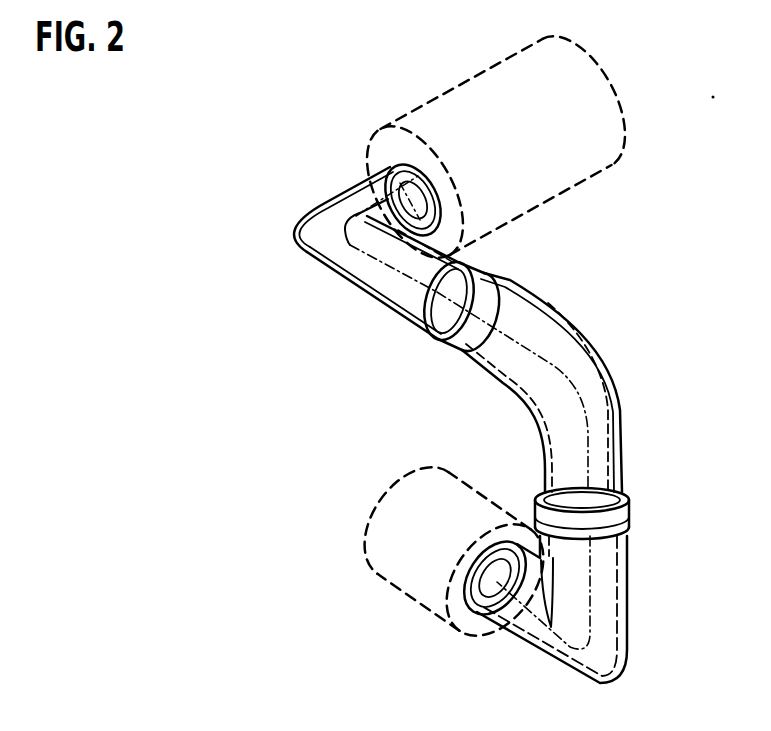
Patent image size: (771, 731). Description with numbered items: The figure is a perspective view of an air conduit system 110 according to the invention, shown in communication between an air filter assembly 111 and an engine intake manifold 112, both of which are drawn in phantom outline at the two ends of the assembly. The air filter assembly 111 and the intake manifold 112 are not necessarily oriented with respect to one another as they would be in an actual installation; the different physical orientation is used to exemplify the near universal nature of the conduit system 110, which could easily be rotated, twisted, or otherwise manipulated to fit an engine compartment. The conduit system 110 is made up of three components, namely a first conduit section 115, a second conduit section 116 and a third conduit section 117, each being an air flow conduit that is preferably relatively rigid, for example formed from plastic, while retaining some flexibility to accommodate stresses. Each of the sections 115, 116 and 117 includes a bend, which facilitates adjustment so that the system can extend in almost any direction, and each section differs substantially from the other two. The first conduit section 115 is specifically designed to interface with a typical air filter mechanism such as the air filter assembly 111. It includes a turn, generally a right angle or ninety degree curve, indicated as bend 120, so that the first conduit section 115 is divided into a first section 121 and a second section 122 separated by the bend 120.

The conduit system 110 is at (545, 284).
The air filter assembly 111 is at (613, 98).
The engine intake manifold 112 is at (433, 623).
The first conduit section 115 is at (343, 280).
The second conduit section 116 is at (607, 358).
The third conduit section 117 is at (630, 593).
The bend 120 is at (300, 235).
The first section 121 is at (357, 187).
The second section 122 is at (417, 320).